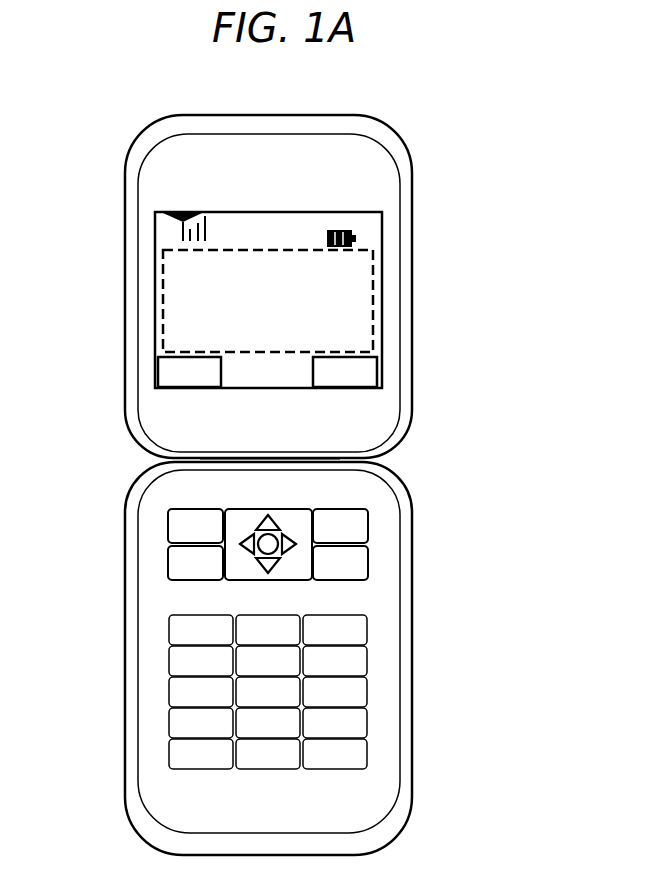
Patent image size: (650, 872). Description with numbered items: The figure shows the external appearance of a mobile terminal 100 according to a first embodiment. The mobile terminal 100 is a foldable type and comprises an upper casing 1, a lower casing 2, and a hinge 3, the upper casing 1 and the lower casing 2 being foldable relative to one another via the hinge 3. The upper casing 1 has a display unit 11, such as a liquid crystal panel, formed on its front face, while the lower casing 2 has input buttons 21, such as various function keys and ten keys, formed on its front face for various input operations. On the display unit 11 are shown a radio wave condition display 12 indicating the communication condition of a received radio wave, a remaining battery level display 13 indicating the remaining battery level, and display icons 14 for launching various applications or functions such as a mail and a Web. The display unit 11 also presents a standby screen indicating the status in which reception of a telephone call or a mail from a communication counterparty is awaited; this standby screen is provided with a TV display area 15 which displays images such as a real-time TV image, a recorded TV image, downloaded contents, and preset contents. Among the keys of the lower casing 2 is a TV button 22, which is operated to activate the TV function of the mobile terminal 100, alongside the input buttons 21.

The mobile terminal 100 is at (462, 110).
The upper casing 1 is at (422, 260).
The lower casing 2 is at (421, 655).
The hinge 3 is at (406, 456).
The display unit 11 is at (268, 212).
The radio wave condition display 12 is at (202, 213).
The remaining battery level display 13 is at (348, 228).
The display icons 14 is at (313, 370).
The TV display area 15 is at (348, 302).
The input buttons 21 is at (390, 562).
The TV button 22 is at (171, 630).